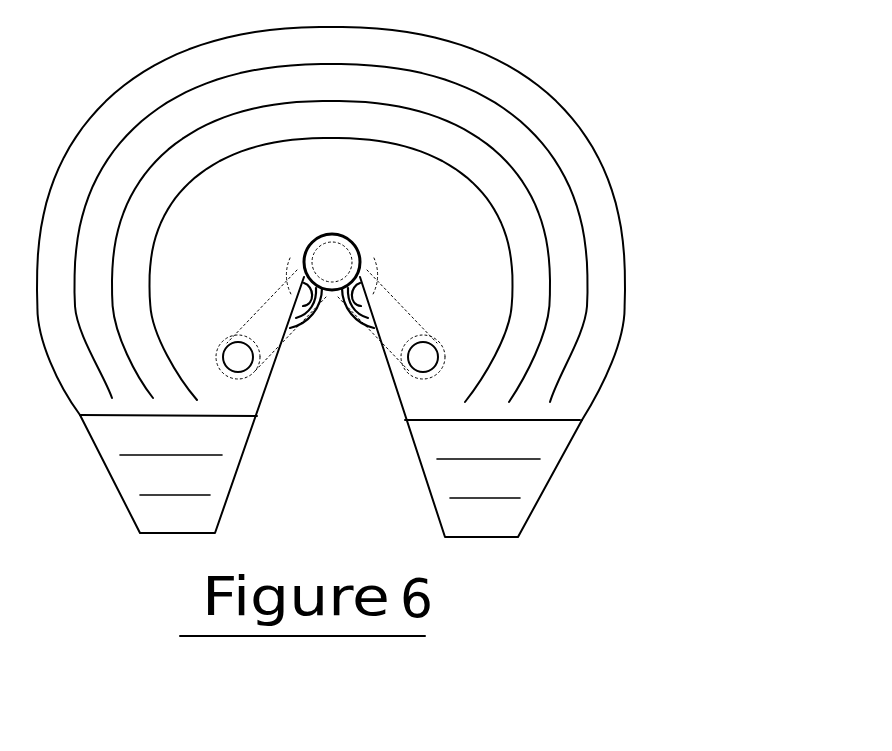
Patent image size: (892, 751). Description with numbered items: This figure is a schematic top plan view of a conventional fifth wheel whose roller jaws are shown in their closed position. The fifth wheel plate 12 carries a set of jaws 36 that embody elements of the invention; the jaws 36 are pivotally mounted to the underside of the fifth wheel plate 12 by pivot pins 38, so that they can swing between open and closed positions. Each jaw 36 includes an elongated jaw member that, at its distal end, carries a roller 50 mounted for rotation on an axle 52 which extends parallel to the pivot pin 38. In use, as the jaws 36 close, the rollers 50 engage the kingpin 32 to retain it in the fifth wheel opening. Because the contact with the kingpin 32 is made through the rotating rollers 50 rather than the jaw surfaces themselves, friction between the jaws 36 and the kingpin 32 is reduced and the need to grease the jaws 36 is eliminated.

The fifth wheel plate 12 is at (557, 473).
The kingpin 32 is at (355, 232).
The axle 52 is at (375, 278).
The roller 50 is at (395, 290).
The jaws 36 is at (415, 322).
The pivot pins 38 is at (445, 363).